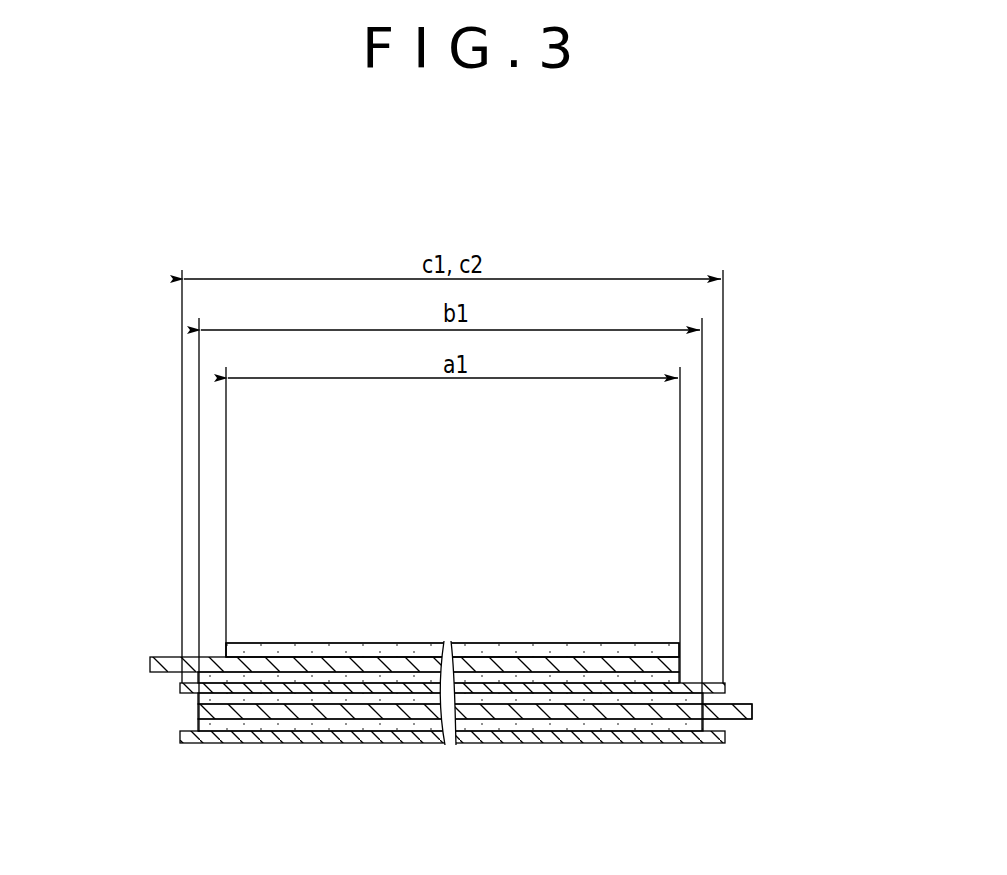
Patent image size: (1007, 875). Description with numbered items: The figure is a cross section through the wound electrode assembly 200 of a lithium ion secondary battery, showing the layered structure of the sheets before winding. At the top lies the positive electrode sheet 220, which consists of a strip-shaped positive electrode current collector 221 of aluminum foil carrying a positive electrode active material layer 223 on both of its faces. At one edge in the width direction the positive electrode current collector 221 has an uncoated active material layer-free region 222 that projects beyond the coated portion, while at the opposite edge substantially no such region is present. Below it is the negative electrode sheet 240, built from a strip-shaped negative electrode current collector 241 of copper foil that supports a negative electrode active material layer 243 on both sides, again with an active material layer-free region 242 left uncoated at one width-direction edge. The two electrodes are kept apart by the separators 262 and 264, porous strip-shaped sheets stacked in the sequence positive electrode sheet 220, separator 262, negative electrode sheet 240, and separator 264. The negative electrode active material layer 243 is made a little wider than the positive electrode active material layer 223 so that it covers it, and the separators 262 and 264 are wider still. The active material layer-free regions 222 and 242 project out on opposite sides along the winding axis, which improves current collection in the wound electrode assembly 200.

The wound electrode assembly 200 is at (452, 689).
The positive electrode sheet 220 is at (355, 616).
The positive electrode current collector 221 is at (543, 656).
The active material layer-free region 222 is at (172, 657).
The positive electrode active material layer 223 is at (272, 672).
The negative electrode sheet 240 is at (535, 754).
The negative electrode current collector 241 is at (370, 717).
The active material layer-free region 242 is at (748, 704).
The negative electrode active material layer 243 is at (557, 703).
The separator 262 is at (197, 697).
The separator 264 is at (188, 745).